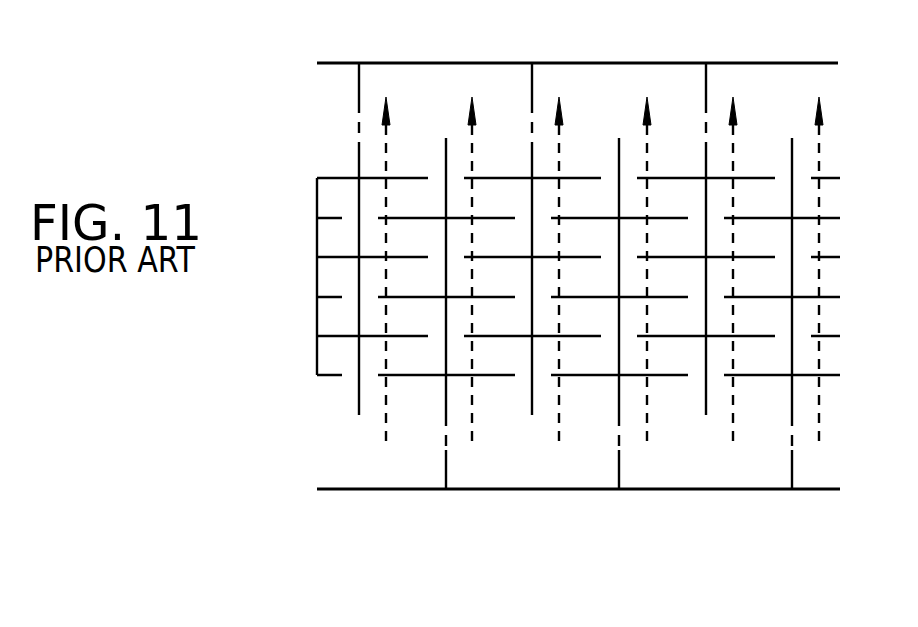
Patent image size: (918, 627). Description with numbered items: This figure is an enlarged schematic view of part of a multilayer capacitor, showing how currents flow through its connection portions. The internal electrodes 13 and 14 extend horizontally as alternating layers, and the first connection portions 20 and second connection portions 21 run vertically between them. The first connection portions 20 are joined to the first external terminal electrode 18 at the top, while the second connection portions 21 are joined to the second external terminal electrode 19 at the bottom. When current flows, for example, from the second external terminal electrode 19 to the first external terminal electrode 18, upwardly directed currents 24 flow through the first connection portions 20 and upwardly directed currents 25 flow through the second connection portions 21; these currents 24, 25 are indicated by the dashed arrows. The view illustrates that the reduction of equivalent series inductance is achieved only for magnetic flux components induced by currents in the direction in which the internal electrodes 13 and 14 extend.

The internal electrode 13 is at (823, 178).
The internal electrode 14 is at (823, 218).
The first external terminal electrode 18 is at (317, 63).
The second external terminal electrode 19 is at (317, 489).
The first connection portion 20 is at (359, 83).
The second connection portion 21 is at (446, 467).
The current 24 is at (388, 140).
The current 25 is at (474, 140).